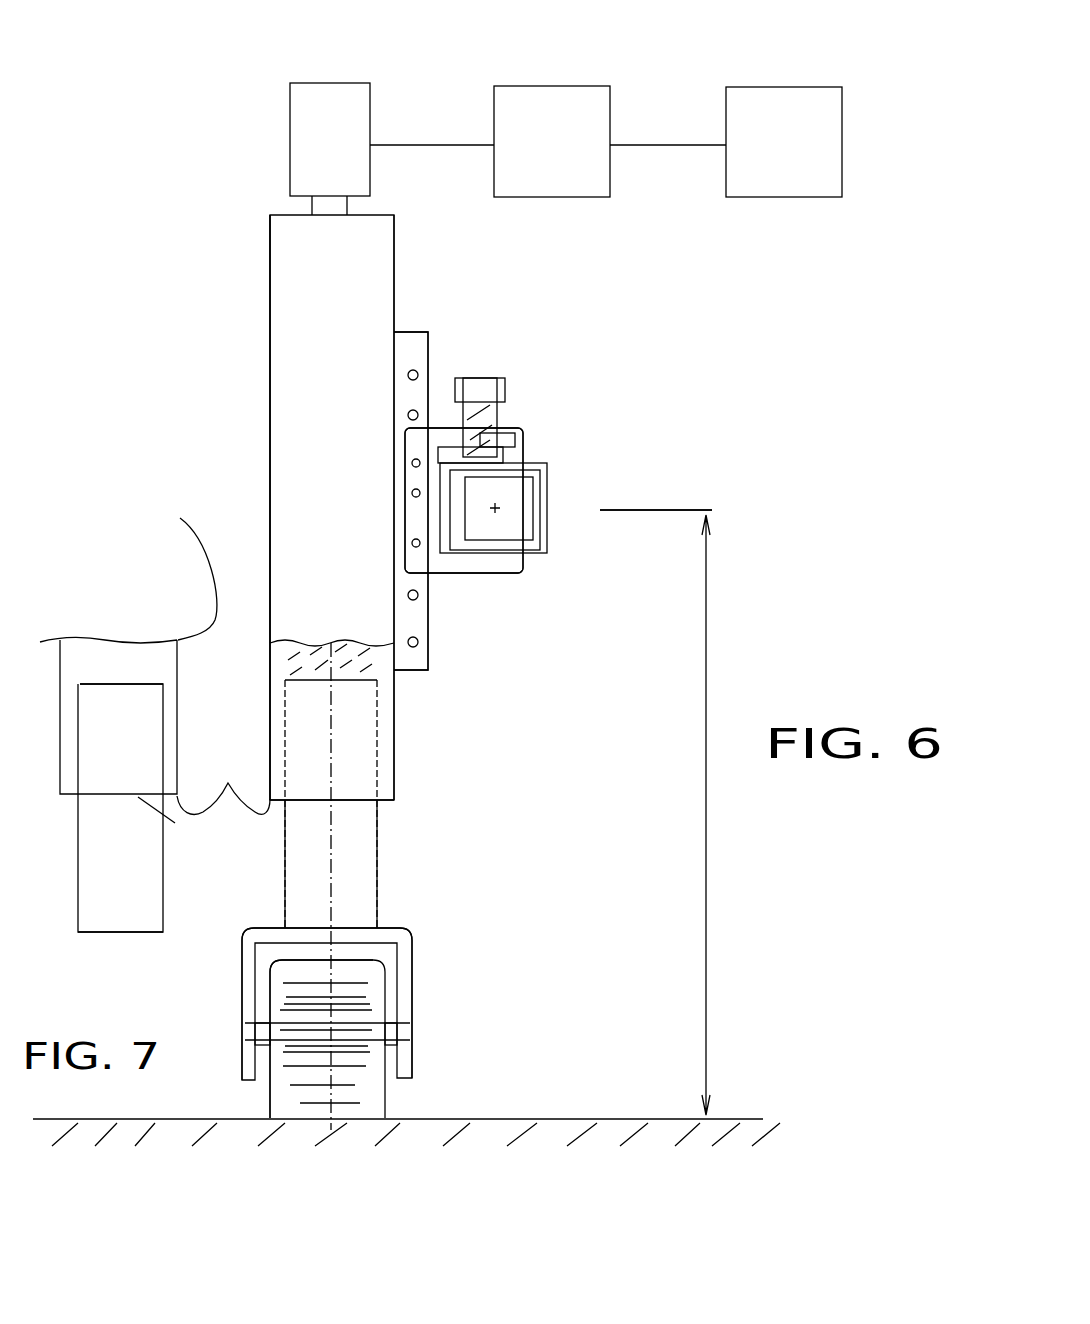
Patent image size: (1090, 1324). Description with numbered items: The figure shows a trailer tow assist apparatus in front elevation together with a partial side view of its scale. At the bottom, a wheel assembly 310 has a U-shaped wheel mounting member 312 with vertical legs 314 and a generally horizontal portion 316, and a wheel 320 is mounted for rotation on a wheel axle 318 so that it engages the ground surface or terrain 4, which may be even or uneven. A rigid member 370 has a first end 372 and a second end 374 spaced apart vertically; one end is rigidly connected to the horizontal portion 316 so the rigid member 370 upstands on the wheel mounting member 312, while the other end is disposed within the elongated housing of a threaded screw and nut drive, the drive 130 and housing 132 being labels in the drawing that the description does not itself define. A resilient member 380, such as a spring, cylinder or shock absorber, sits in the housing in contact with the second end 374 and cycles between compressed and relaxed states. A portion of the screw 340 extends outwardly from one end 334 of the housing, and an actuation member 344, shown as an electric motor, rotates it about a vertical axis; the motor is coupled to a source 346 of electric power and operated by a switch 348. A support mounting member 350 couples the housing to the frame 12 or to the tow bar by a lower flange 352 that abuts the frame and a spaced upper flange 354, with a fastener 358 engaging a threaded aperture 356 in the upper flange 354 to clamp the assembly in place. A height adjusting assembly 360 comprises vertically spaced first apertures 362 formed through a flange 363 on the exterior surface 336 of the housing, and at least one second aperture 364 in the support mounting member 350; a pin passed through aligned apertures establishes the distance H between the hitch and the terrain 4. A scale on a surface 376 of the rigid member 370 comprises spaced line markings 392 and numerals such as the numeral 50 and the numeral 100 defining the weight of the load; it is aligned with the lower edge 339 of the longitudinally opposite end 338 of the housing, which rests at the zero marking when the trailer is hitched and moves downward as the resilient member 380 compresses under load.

In FIG. 6, the actuation member 344 is at (328, 110).
In FIG. 6, the switch 348 is at (568, 100).
In FIG. 6, the source of electric power 346 is at (783, 98).
In FIG. 6, the screw 340 is at (312, 212).
In FIG. 6, the one end of the housing 334 is at (289, 218).
In FIG. 6, the exterior surface of the housing 336 is at (394, 242).
In FIG. 6, the level sensing unit 130 is at (252, 423).
In FIG. 6, the housing body 132 is at (268, 497).
In FIG. 6, the resilient member 380 is at (357, 645).
In FIG. 6, the flange 363 is at (430, 675).
In FIG. 6, the first apertures 362 is at (418, 373).
In FIG. 6, the height adjusting assembly 360 is at (512, 292).
In FIG. 6, the second aperture 364 is at (412, 508).
In FIG. 6, the lower flange 352 is at (500, 575).
In FIG. 6, the upper flange 354 is at (512, 455).
In FIG. 6, the threaded aperture 356 is at (487, 437).
In FIG. 6, the fastener 358 is at (487, 380).
In FIG. 6, the support mounting member 350 is at (678, 382).
In FIG. 6, the frame 12 is at (545, 515).
In FIG. 6, the distance H is at (699, 815).
In FIG. 6, the second end of the rigid member 374 is at (358, 688).
In FIG. 7, the second end of the rigid member 374 is at (110, 674).
In FIG. 6, the rigid member 370 is at (355, 843).
In FIG. 6, the longitudinally opposite end of the housing 338 is at (388, 794).
In FIG. 6, the first end of the rigid member 372 is at (360, 918).
In FIG. 7, the first end of the rigid member 372 is at (128, 932).
In FIG. 6, the horizontal portion 316 is at (400, 928).
In FIG. 6, the wheel 320 is at (378, 1098).
In FIG. 6, the vertical legs 314 is at (410, 1058).
In FIG. 6, the wheel axle 318 is at (390, 1035).
In FIG. 6, the wheel assembly 310 is at (590, 978).
In FIG. 6, the wheel mounting member 312 is at (228, 1056).
In FIG. 6, the ground surface 4 is at (745, 1119).
In FIG. 7, the surface of the rigid member 376 is at (145, 903).
In FIG. 7, the line markings 392 is at (150, 846).
In FIG. 7, the lower edge 339 is at (223, 783).
In FIG. 7, the scale marking 100 is at (117, 795).
In FIG. 7, the scale numeral 50 is at (113, 800).